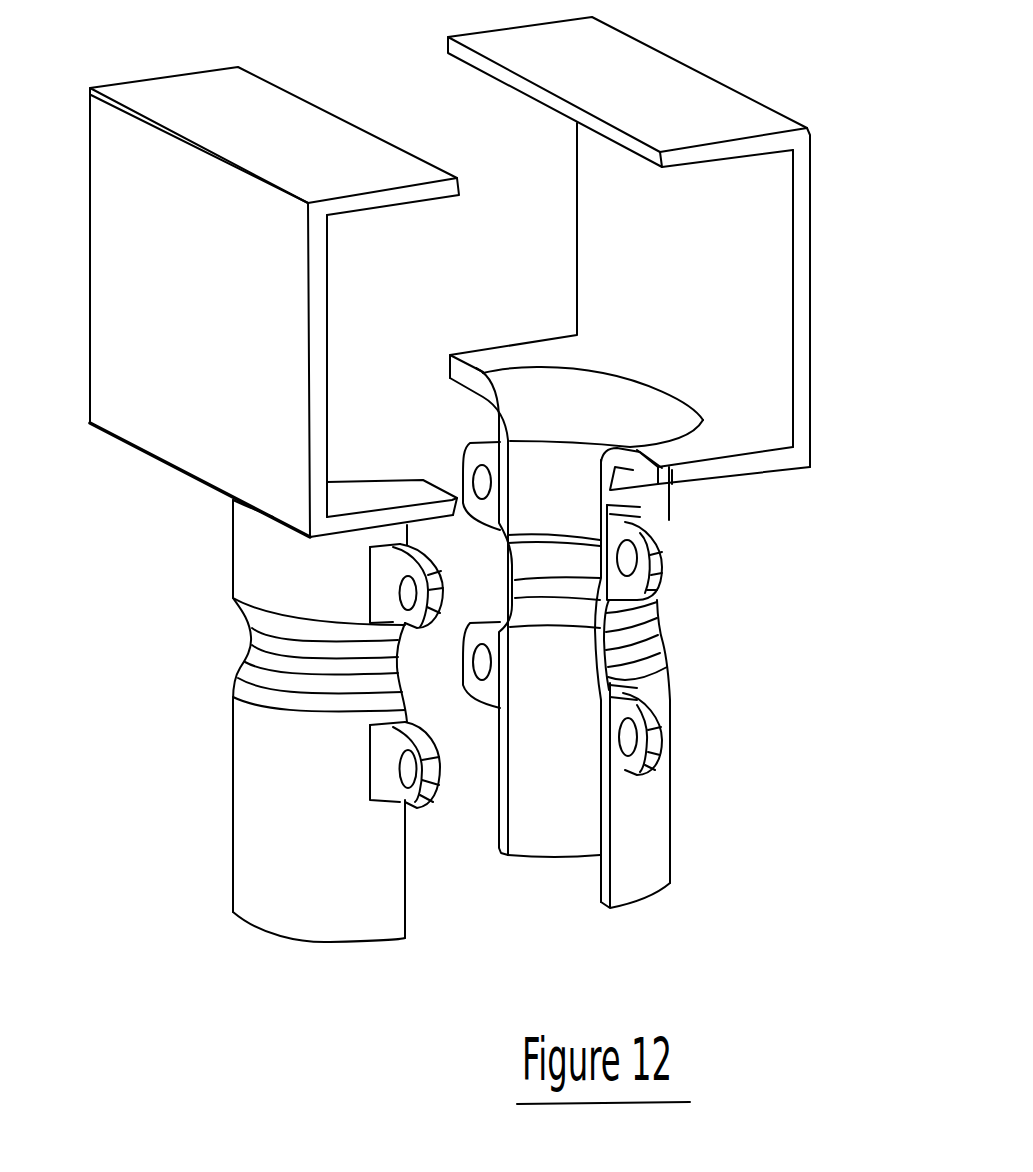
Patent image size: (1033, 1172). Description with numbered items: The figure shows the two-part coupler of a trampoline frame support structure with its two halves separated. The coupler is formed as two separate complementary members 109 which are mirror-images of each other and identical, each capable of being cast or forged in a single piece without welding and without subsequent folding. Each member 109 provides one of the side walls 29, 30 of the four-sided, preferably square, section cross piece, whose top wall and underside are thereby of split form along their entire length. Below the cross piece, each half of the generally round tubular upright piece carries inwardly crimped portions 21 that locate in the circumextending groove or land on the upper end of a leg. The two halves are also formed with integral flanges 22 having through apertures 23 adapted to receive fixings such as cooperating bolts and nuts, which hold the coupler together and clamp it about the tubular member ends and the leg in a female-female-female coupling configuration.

The complementary member 109 is at (130, 232).
The side wall 29 is at (187, 367).
The side wall 30 is at (748, 251).
The inwardly crimped portion 21 is at (563, 588).
The integral flange 22 is at (432, 808).
The through aperture 23 is at (627, 552).